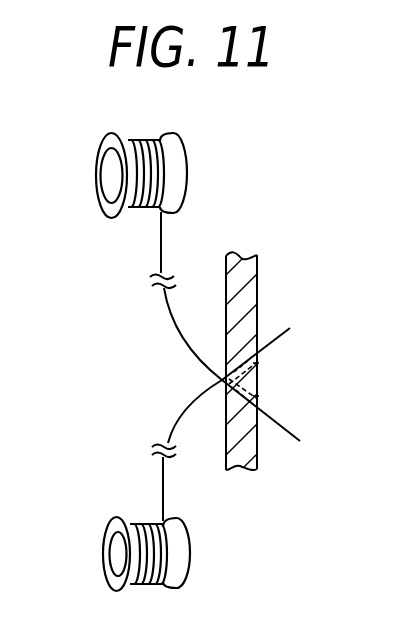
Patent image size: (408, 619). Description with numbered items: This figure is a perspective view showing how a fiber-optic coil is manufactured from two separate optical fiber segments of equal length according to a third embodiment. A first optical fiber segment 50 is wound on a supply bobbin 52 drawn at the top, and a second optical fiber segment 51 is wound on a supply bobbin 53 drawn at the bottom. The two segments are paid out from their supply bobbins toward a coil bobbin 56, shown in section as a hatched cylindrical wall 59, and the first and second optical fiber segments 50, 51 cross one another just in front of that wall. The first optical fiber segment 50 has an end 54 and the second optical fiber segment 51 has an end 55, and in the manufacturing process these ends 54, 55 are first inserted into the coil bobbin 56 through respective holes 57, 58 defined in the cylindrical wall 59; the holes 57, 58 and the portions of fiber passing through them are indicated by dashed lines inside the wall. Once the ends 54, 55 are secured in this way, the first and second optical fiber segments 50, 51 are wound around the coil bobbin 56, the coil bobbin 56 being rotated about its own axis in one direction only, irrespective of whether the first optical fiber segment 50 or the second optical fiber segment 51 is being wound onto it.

The first optical fiber segment 50 is at (158, 256).
The second optical fiber segment 51 is at (163, 492).
The supply bobbin 52 is at (97, 197).
The supply bobbin 53 is at (103, 546).
The end 54 is at (298, 441).
The end 55 is at (290, 331).
The coil bobbin 56 is at (239, 255).
The hole 57 is at (261, 397).
The hole 58 is at (260, 366).
The cylindrical wall 59 is at (258, 278).